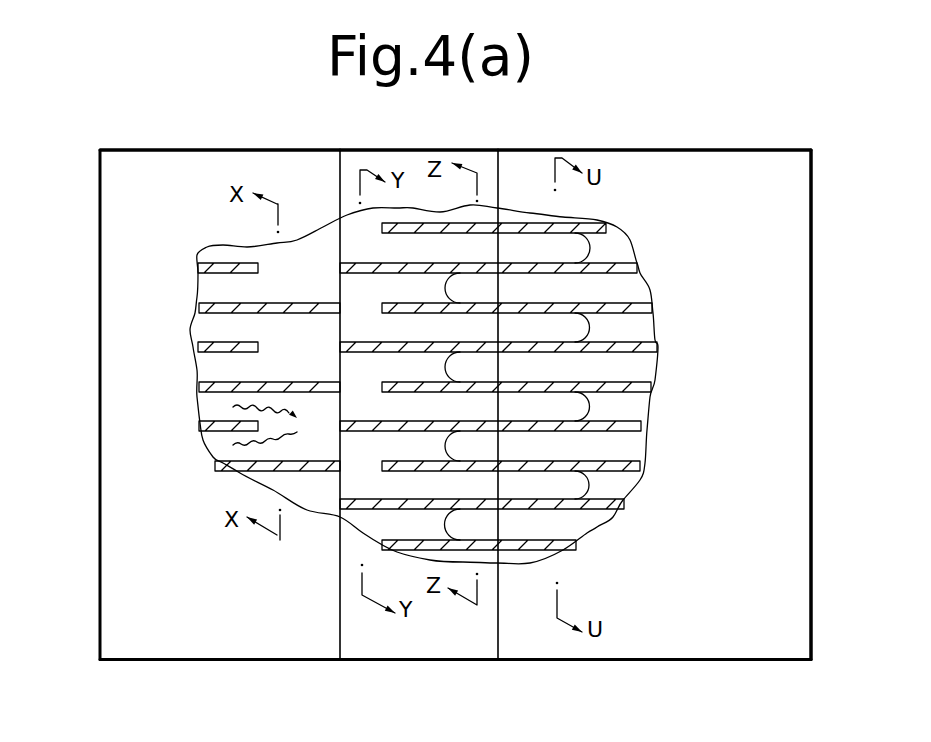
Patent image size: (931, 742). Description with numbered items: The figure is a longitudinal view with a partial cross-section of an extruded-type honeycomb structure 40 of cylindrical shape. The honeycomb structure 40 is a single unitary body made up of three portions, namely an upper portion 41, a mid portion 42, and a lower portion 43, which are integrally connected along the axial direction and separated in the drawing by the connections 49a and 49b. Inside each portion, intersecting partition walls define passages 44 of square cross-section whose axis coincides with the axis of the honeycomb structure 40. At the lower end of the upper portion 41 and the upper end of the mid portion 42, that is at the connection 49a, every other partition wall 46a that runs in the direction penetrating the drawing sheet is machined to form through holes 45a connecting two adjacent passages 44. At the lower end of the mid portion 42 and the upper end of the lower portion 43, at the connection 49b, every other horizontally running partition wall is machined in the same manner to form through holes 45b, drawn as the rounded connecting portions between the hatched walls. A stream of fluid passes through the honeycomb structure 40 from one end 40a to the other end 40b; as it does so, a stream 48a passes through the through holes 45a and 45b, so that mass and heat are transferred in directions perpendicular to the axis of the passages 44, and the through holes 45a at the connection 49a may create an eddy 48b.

The extruded-type honeycomb structure 40 is at (86, 531).
The one end of the honeycomb structure 40a is at (100, 637).
The other end of the honeycomb structure 40b is at (812, 630).
The upper portion 41 is at (231, 647).
The mid portion 42 is at (418, 652).
The lower portion 43 is at (610, 651).
The passages 44 is at (625, 483).
The through holes 45a is at (300, 262).
The through holes 45b is at (570, 395).
The partition walls 46a is at (200, 267).
The stream of fluid 48a is at (360, 305).
The eddy 48b is at (237, 464).
The connection 49a is at (343, 652).
The connection 49b is at (500, 652).